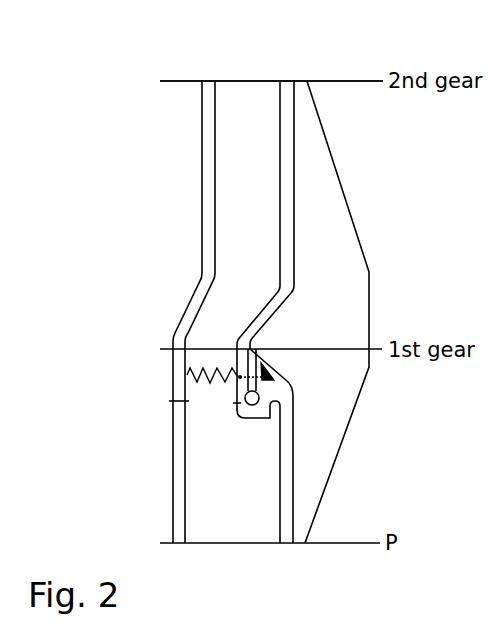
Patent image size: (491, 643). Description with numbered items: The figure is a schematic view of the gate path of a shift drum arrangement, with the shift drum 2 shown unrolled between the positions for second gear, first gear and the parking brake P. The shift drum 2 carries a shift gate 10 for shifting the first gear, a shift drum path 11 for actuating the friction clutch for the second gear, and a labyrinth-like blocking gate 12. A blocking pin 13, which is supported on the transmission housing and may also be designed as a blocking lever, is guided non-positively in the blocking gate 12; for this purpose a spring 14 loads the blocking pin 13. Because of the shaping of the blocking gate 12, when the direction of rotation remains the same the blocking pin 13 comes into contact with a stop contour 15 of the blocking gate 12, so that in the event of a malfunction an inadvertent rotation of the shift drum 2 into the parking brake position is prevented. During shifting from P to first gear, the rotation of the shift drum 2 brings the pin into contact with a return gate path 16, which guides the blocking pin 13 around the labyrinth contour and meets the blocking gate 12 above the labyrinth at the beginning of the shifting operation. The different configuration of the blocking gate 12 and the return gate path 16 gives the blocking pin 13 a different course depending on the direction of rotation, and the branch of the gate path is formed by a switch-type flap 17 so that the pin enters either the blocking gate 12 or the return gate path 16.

The shift drum 2 is at (237, 93).
The shift gate 10 is at (209, 168).
The shift drum path 11 is at (353, 223).
The blocking gate 12 is at (287, 252).
The blocking pin 13 is at (240, 371).
The spring 14 is at (213, 383).
The stop contour 15 is at (250, 418).
The return gate path 16 is at (270, 392).
The switch-type flap 17 is at (252, 367).